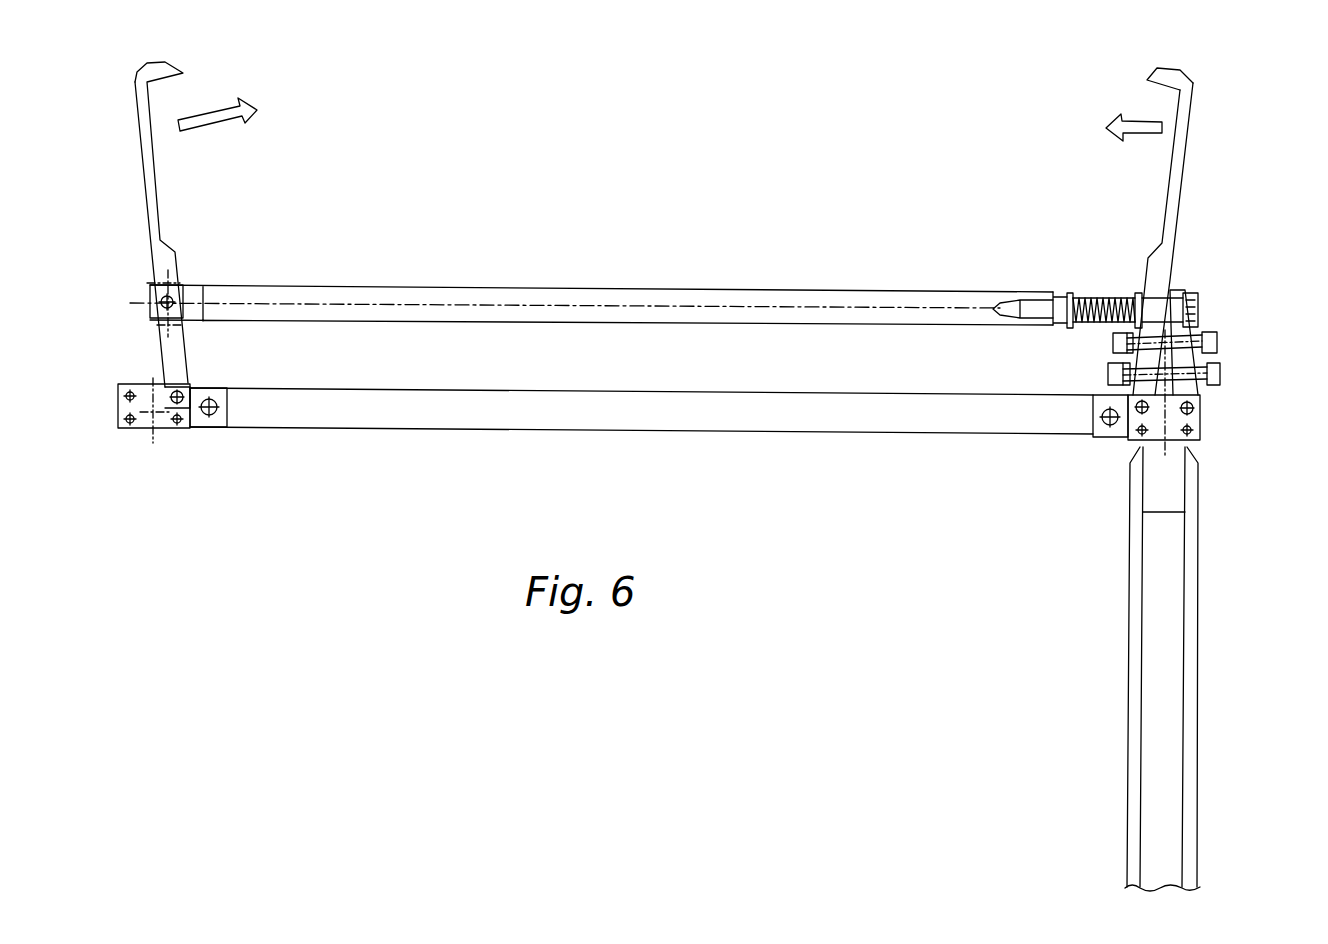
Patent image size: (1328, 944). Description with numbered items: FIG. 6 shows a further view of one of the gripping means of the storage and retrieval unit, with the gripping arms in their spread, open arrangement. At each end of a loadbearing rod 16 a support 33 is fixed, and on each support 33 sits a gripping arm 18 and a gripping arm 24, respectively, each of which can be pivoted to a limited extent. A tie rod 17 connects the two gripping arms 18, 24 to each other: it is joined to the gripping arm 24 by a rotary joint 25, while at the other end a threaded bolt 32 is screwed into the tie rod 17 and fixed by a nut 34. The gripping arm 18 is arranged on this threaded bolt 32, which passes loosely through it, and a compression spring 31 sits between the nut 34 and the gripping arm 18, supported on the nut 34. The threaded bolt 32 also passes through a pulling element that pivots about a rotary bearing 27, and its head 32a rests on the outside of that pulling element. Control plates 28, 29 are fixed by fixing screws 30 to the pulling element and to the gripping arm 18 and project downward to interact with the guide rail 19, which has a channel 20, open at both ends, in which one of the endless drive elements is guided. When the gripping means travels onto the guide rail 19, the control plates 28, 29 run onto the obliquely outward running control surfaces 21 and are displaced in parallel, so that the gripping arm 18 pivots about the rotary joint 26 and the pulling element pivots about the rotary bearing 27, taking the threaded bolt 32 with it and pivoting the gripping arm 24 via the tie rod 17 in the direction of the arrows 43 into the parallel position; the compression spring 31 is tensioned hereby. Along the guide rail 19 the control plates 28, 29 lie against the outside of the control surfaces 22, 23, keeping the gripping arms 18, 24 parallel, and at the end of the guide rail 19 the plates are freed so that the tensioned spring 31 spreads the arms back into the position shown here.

The loadbearing rod 16 is at (430, 418).
The tie rod 17 is at (475, 300).
The gripping arm 18 is at (1182, 195).
The guide rail 19 is at (1205, 693).
The channel 20 is at (1163, 630).
The control surface 21 is at (1196, 458).
The control surface 22 is at (1207, 523).
The control surface 23 is at (1128, 610).
The gripping arm 24 is at (147, 175).
The rotary joint 25 is at (167, 302).
The rotary joint 26 is at (167, 393).
The rotary bearing 27 is at (1190, 408).
The control plate 28 is at (1217, 353).
The control plate 29 is at (1113, 352).
The fixing screw 30 is at (1213, 340).
The compression spring 31 is at (1102, 297).
The threaded bolt 32 is at (1197, 307).
The head 32a is at (1187, 297).
The support 33 is at (170, 433).
The nut 34 is at (1063, 293).
The arrow 43 is at (215, 110).